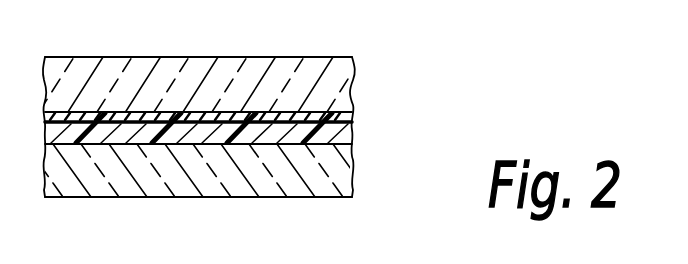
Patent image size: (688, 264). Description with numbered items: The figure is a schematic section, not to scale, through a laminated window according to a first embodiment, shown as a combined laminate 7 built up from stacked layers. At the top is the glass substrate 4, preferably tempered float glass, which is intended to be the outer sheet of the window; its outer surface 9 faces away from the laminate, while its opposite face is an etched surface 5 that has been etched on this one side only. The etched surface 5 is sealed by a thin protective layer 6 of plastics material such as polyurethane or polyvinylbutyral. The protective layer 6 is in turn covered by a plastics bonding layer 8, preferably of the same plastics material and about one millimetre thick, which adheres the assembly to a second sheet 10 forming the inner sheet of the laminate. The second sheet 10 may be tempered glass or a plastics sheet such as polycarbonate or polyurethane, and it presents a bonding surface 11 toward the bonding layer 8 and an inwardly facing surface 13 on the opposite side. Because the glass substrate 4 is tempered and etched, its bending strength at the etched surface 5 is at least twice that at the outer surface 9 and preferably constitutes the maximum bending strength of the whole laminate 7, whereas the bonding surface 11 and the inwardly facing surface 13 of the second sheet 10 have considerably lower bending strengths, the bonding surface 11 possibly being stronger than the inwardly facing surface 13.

The combined laminate 7 is at (392, 134).
The outer surface 9 is at (102, 57).
The glass substrate 4 is at (153, 72).
The protective layer 6 is at (202, 115).
The etched surface 5 is at (264, 118).
The bonding layer 8 is at (290, 135).
The bonding surface 11 is at (115, 144).
The second sheet 10 is at (247, 178).
The inwardly facing surface 13 is at (188, 198).